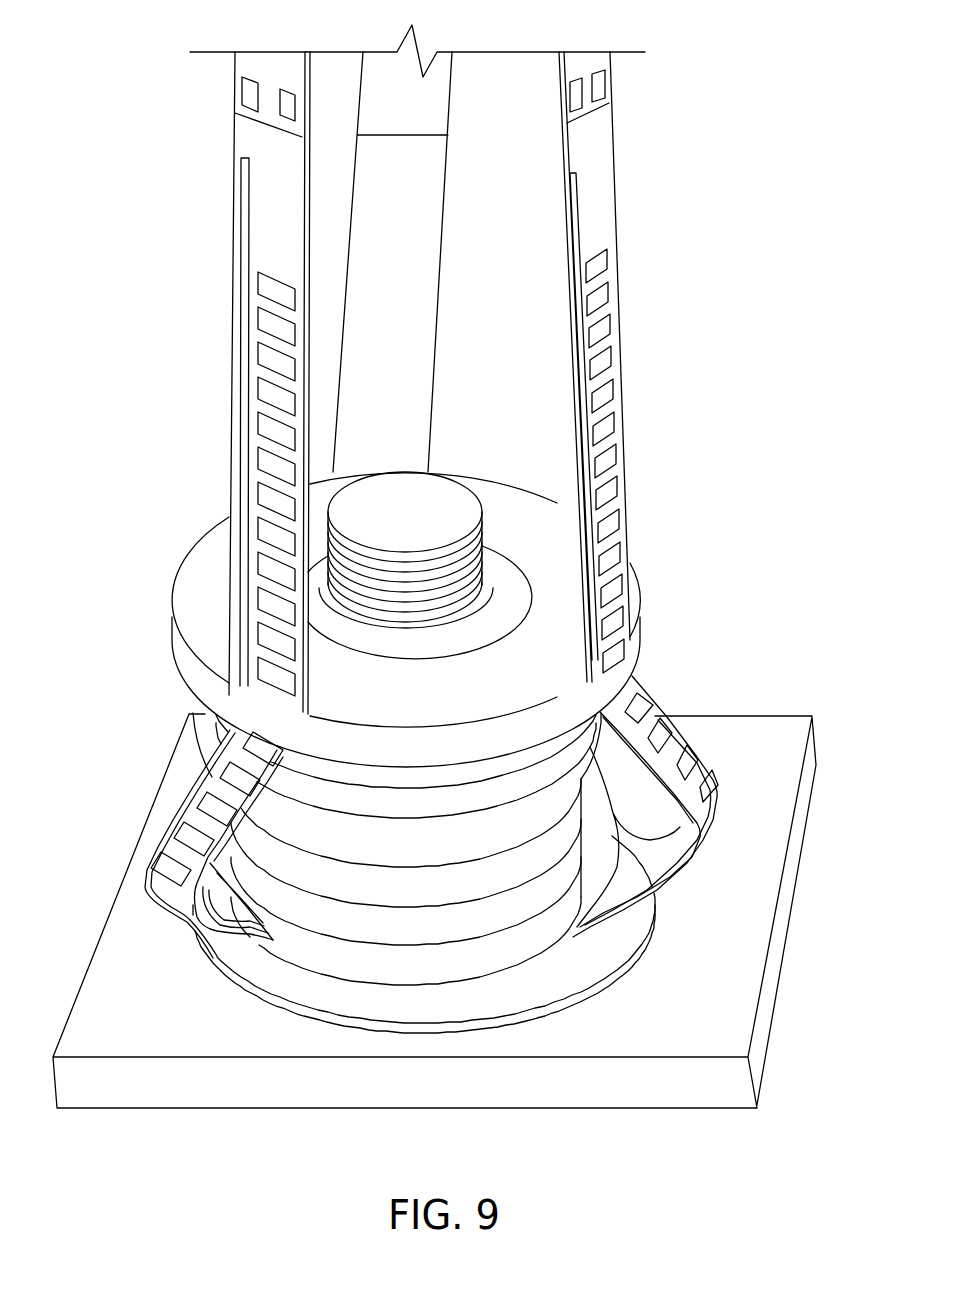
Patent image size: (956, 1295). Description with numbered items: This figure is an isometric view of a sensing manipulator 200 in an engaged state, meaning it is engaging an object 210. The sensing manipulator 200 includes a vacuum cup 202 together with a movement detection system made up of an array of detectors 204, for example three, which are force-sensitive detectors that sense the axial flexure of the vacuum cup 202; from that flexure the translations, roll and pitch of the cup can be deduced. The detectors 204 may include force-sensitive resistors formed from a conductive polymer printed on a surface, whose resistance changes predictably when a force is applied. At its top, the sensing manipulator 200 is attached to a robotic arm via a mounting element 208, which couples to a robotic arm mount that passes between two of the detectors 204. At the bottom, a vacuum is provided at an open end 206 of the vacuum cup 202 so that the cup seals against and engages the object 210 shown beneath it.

The sensing manipulator 200 is at (125, 292).
The vacuum cup 202 is at (555, 930).
The detectors 204 is at (233, 446).
The open end 206 is at (268, 1003).
The mounting element 208 is at (425, 488).
The object 210 is at (120, 907).